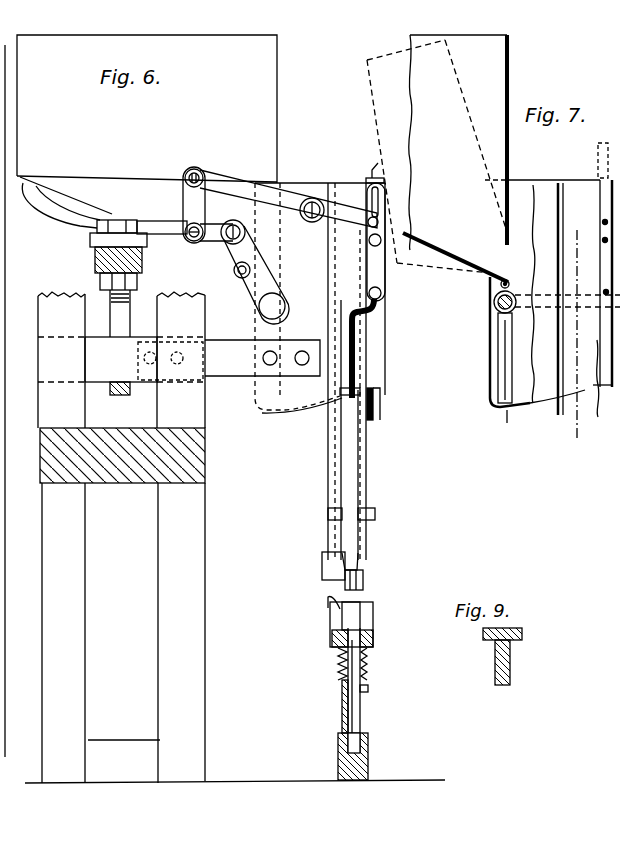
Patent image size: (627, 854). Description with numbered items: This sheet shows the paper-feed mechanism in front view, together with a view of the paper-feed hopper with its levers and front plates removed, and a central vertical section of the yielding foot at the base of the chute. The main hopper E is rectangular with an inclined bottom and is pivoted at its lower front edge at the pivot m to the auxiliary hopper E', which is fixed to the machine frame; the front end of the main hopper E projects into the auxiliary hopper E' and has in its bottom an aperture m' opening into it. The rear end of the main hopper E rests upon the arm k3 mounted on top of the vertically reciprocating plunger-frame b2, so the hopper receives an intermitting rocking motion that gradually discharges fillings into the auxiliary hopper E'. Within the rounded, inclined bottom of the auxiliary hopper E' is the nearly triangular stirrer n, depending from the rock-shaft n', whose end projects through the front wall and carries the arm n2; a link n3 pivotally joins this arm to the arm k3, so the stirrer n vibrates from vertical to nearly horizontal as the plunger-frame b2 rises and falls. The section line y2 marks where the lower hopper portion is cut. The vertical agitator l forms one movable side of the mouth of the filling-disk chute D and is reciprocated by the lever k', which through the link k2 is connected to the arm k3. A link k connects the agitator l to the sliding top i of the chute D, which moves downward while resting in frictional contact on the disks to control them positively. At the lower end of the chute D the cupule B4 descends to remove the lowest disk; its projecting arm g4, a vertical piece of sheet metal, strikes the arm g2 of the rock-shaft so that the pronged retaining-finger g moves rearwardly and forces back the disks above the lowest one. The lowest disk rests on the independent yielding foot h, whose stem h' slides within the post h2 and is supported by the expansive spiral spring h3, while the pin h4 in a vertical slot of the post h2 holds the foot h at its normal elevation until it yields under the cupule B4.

In FIG. 6, the main hopper E is at (147, 124).
In FIG. 7, the main hopper E is at (437, 154).
In FIG. 6, the auxiliary hopper E' is at (320, 298).
In FIG. 7, the auxiliary hopper E' is at (542, 287).
In FIG. 6, the plunger-frame b2 is at (171, 483).
In FIG. 6, the link k is at (363, 348).
In FIG. 6, the lever k' is at (288, 199).
In FIG. 6, the link k2 is at (182, 205).
In FIG. 6, the arm k3 is at (185, 230).
In FIG. 6, the link n3 is at (228, 246).
In FIG. 6, the arm n2 is at (271, 304).
In FIG. 6, the pivot m is at (265, 275).
In FIG. 7, the pivot m is at (484, 284).
In FIG. 7, the aperture m' is at (466, 257).
In FIG. 7, the stirrer n is at (537, 350).
In FIG. 7, the rock-shaft n' is at (487, 302).
In FIG. 6, the vertical agitator l is at (384, 397).
In FIG. 7, the vertical agitator l is at (616, 399).
In FIG. 6, the sliding top i is at (350, 430).
In FIG. 6, the filling-disk chute D is at (350, 492).
In FIG. 6, the retaining-finger g is at (330, 625).
In FIG. 6, the arm g2 is at (326, 601).
In FIG. 6, the projecting arm g4 is at (322, 566).
In FIG. 6, the cupule B4 is at (364, 578).
In FIG. 6, the yielding foot h is at (378, 690).
In FIG. 9, the yielding foot h is at (491, 636).
In FIG. 6, the stem h' is at (377, 690).
In FIG. 9, the stem h' is at (492, 662).
In FIG. 6, the post h2 is at (342, 706).
In FIG. 6, the expansive spiral spring h3 is at (338, 660).
In FIG. 6, the pin h4 is at (368, 690).
In FIG. 7, the section line y2 is at (567, 347).